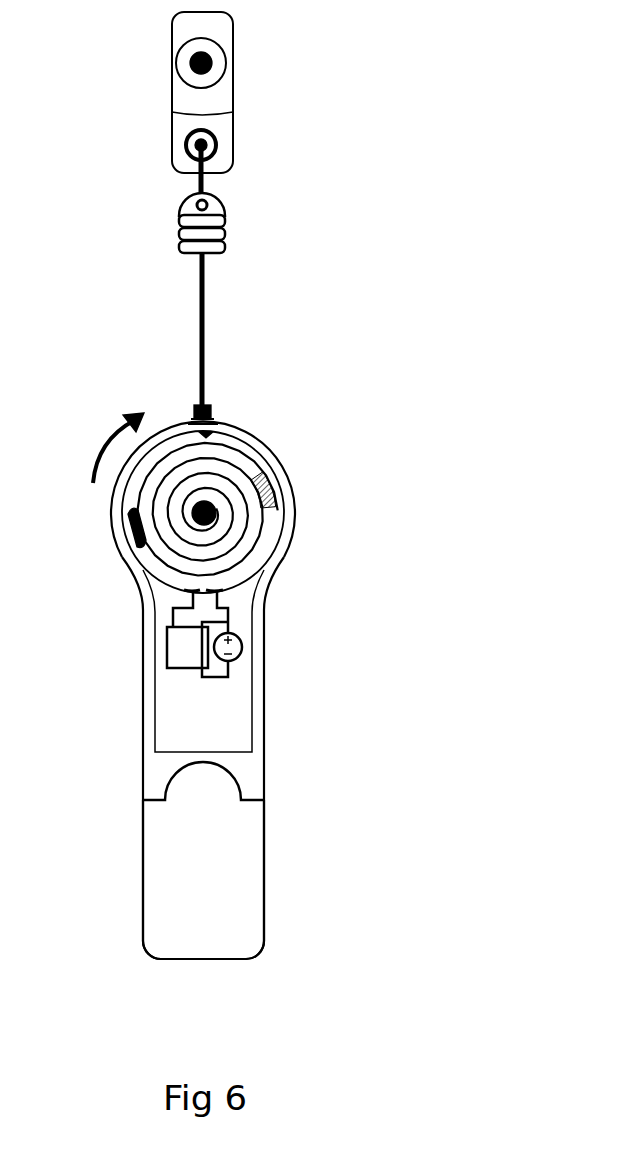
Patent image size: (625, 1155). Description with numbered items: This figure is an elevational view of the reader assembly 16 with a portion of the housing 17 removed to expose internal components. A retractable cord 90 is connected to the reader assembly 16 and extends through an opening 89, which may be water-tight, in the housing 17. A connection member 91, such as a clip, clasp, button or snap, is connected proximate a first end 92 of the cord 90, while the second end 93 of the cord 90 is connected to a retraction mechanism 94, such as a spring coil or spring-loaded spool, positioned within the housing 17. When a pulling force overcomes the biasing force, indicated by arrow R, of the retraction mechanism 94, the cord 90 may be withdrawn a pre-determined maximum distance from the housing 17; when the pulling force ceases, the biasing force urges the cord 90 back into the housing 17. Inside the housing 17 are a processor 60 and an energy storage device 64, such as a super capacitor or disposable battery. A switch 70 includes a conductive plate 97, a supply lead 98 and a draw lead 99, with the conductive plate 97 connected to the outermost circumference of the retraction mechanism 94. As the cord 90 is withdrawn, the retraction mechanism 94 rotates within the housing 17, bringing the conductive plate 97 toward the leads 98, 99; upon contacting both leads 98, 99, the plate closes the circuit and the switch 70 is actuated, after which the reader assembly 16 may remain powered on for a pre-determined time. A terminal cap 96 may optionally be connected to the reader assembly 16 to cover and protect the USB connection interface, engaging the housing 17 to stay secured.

The reader assembly 16 is at (413, 127).
The housing 17 is at (252, 771).
The processor 60 is at (177, 670).
The energy storage device 64 is at (244, 640).
The switch 70 is at (302, 538).
The opening 89 is at (193, 410).
The cord 90 is at (206, 342).
The connection member 91 is at (235, 80).
The first end 92 is at (205, 265).
The second end 93 is at (212, 406).
The retraction mechanism 94 is at (262, 450).
The terminal cap 96 is at (243, 878).
The conductive plate 97 is at (127, 540).
The supply lead 98 is at (226, 598).
The draw lead 99 is at (183, 603).
The biasing force R is at (98, 452).